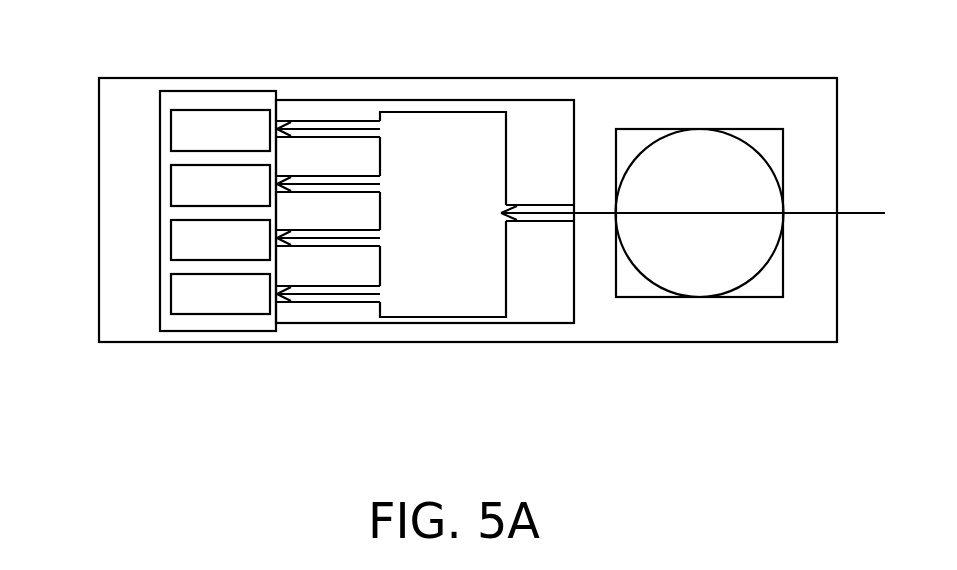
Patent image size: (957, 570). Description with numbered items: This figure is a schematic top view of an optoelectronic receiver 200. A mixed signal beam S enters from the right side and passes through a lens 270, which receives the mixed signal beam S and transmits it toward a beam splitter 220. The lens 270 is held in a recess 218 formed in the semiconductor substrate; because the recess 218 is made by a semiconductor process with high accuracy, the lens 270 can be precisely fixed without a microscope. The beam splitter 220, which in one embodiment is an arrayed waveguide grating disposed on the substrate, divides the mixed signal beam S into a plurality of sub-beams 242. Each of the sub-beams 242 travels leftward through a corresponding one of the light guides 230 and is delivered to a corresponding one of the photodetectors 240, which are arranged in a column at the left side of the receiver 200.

The optoelectronic receiver 200 is at (838, 411).
The recess 218 is at (616, 151).
The beam splitter 220 is at (440, 127).
The light guides 230 is at (340, 176).
The photodetectors 240 is at (180, 131).
The sub-beams 242 is at (320, 240).
The lens 270 is at (703, 147).
The mixed signal beam S is at (873, 212).